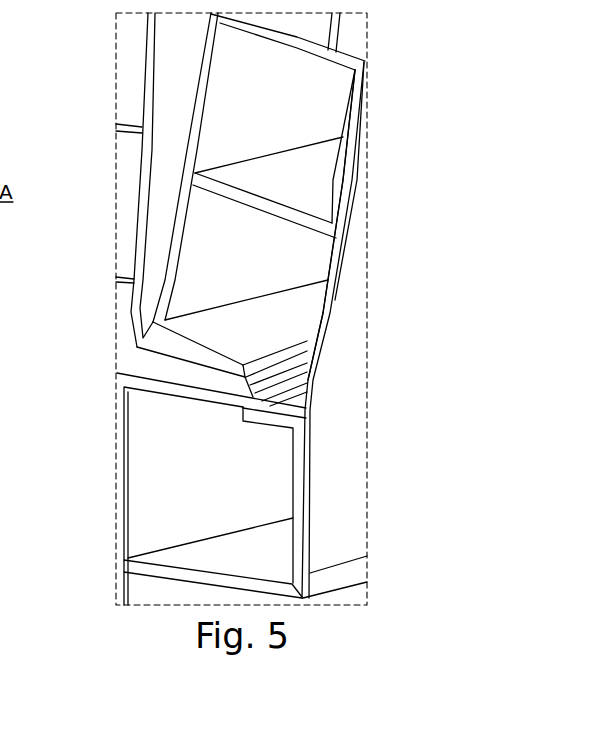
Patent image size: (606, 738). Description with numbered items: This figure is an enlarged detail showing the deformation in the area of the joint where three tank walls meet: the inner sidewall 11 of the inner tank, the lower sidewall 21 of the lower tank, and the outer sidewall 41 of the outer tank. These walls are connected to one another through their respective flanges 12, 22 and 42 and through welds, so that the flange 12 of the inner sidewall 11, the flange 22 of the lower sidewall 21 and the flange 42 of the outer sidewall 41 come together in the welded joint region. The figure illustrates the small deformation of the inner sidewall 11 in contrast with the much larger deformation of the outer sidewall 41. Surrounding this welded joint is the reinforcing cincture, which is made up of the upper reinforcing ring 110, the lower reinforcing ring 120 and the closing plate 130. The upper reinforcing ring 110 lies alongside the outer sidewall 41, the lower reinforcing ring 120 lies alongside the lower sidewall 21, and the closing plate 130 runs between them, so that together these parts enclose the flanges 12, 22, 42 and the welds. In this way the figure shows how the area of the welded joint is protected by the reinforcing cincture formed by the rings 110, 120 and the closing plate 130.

The inner sidewall 11 is at (145, 87).
The flange 12 is at (130, 357).
The lower sidewall 21 is at (126, 476).
The flange 22 is at (143, 383).
The outer sidewall 41 is at (176, 243).
The flange 42 is at (138, 352).
The upper reinforcing ring 110 is at (338, 98).
The lower reinforcing ring 120 is at (282, 540).
The closing plate 130 is at (348, 343).